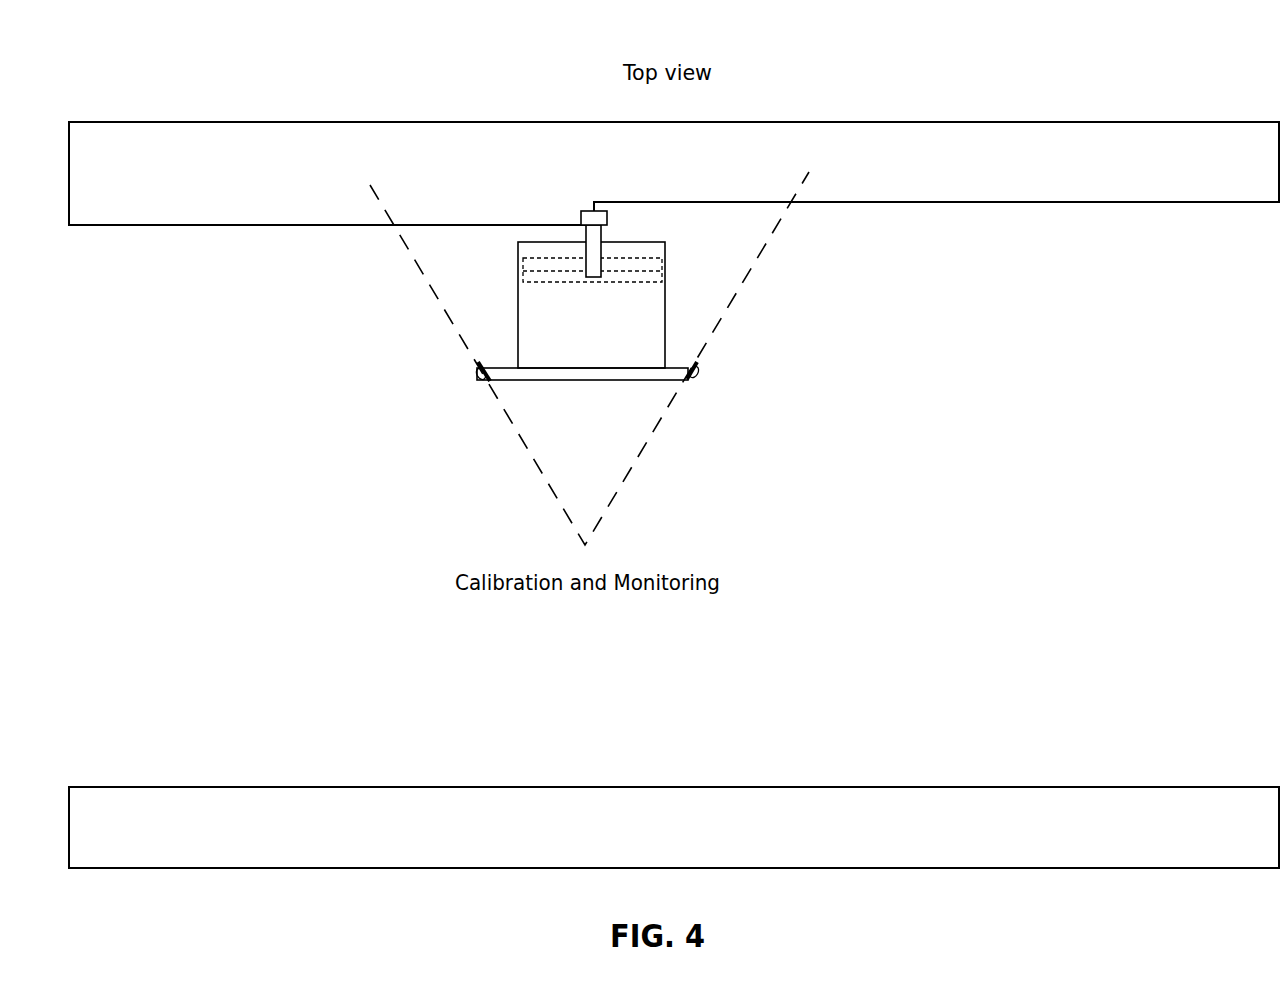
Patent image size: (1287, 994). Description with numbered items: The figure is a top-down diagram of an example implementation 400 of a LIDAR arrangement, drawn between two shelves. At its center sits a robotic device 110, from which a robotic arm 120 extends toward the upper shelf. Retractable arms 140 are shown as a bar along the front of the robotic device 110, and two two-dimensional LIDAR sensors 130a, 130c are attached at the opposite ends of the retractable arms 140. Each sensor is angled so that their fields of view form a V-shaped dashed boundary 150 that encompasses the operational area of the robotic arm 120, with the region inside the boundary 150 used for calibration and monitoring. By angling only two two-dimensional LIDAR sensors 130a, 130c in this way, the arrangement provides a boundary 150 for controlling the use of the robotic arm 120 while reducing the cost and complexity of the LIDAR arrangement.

The example implementation 400 is at (172, 58).
The robotic device 110 is at (591, 305).
The robotic arm 120 is at (607, 218).
The 2D LIDAR sensor 130a is at (478, 375).
The 2D LIDAR sensor 130c is at (700, 374).
The retractable arms 140 is at (590, 381).
The boundary 150 is at (425, 271).